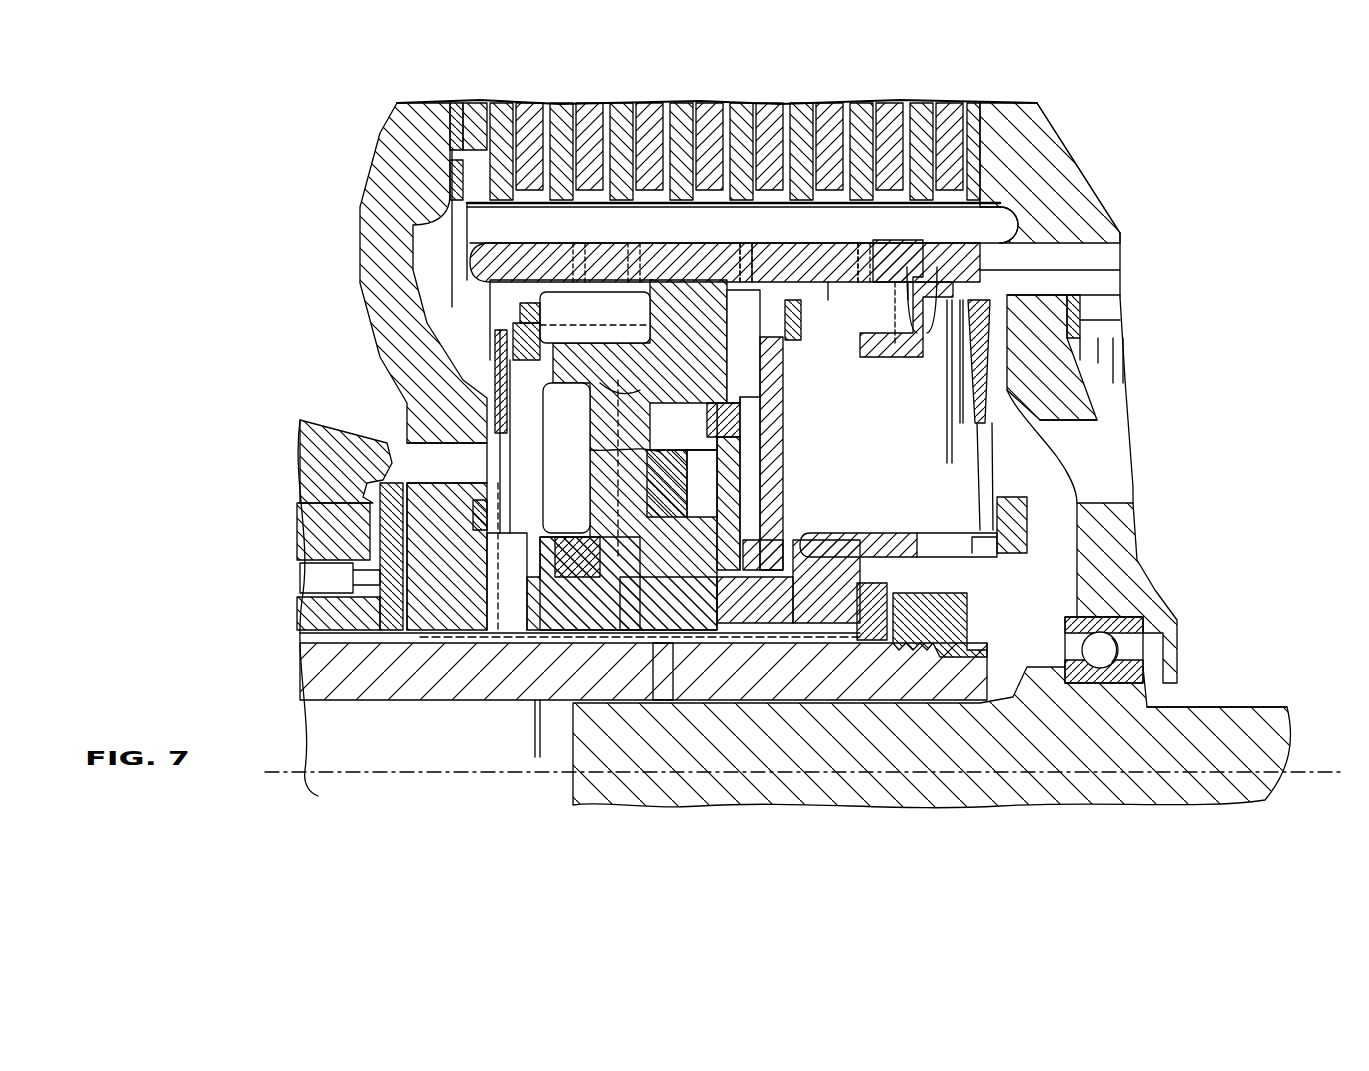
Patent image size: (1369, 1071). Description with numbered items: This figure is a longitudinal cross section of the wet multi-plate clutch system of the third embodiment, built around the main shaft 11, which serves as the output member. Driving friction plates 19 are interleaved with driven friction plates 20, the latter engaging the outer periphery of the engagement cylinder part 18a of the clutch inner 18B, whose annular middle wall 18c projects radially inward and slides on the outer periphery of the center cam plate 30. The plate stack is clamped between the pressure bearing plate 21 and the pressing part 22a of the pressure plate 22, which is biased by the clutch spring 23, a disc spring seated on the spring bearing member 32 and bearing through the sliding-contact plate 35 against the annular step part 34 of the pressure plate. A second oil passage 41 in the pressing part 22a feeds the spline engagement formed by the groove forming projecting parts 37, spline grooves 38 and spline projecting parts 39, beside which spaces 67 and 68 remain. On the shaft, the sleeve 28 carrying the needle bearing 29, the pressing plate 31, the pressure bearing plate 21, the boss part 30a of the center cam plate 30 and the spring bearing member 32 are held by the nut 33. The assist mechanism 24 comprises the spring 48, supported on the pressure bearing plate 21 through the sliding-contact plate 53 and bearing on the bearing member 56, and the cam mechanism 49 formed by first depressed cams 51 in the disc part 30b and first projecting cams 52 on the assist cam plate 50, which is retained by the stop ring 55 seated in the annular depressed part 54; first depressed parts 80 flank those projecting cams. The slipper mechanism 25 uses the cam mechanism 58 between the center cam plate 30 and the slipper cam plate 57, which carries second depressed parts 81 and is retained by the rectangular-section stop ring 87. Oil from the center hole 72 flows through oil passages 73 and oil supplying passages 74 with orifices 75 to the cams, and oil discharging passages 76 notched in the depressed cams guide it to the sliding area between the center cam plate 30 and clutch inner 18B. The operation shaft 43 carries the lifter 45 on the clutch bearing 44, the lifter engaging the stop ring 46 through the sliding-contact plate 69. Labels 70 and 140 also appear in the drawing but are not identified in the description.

The main shaft 11 is at (318, 672).
The engagement cylinder part 18a is at (372, 198).
The clutch inner 18B is at (1020, 229).
The annular middle wall 18c is at (655, 372).
The driving friction plates 19 is at (760, 102).
The driven friction plates 20 is at (545, 103).
The pressure bearing plate 21 is at (385, 338).
The pressure plate 22 is at (1052, 134).
The pressing part 22a is at (1045, 176).
The clutch spring 23 is at (1063, 430).
The assist mechanism 24 is at (604, 276).
The slipper mechanism 25 is at (790, 292).
The sleeve 28 is at (312, 612).
The needle bearing 29 is at (320, 553).
The center cam plate 30 is at (770, 525).
The boss part 30a is at (557, 540).
The disc part 30b is at (728, 393).
The pressing plate 31 is at (342, 463).
The spring bearing member 32 is at (1012, 520).
The nut 33 is at (975, 622).
The annular step part 34 is at (955, 330).
The sliding-contact plate 35 is at (1062, 383).
The groove forming projecting parts 37 is at (888, 357).
The spline grooves 38 is at (893, 300).
The spline projecting parts 39 is at (835, 302).
The second oil passage 41 is at (1118, 261).
The operation shaft 43 is at (1240, 712).
The clutch bearing 44 is at (1110, 650).
The lifter 45 is at (1140, 567).
The stop ring 46 is at (1082, 312).
The spring 48 is at (512, 358).
The cam mechanism 49 is at (622, 637).
The assist cam plate 50 is at (592, 400).
The first depressed cams 51 is at (712, 450).
The first projecting cams 52 is at (690, 473).
The sliding-contact plate 53 is at (487, 518).
The annular depressed part 54 is at (538, 318).
The stop ring 55 is at (518, 315).
The bearing member 56 is at (496, 383).
The slipper cam plate 57 is at (778, 503).
The cam mechanism 58 is at (740, 395).
The space 67 is at (900, 300).
The space 68 is at (915, 357).
The sliding-contact plate 69 is at (1082, 328).
The slit 70 is at (858, 258).
The center hole 72 is at (424, 754).
The oil passages 73 is at (663, 700).
The oil supplying passages 74 is at (672, 568).
The orifices 75 is at (660, 600).
The oil discharging passage 76 is at (640, 436).
The first depressed parts 80 is at (620, 541).
The second depressed parts 81 is at (745, 410).
The stop ring 87 is at (797, 338).
The assembly 140 is at (1126, 226).